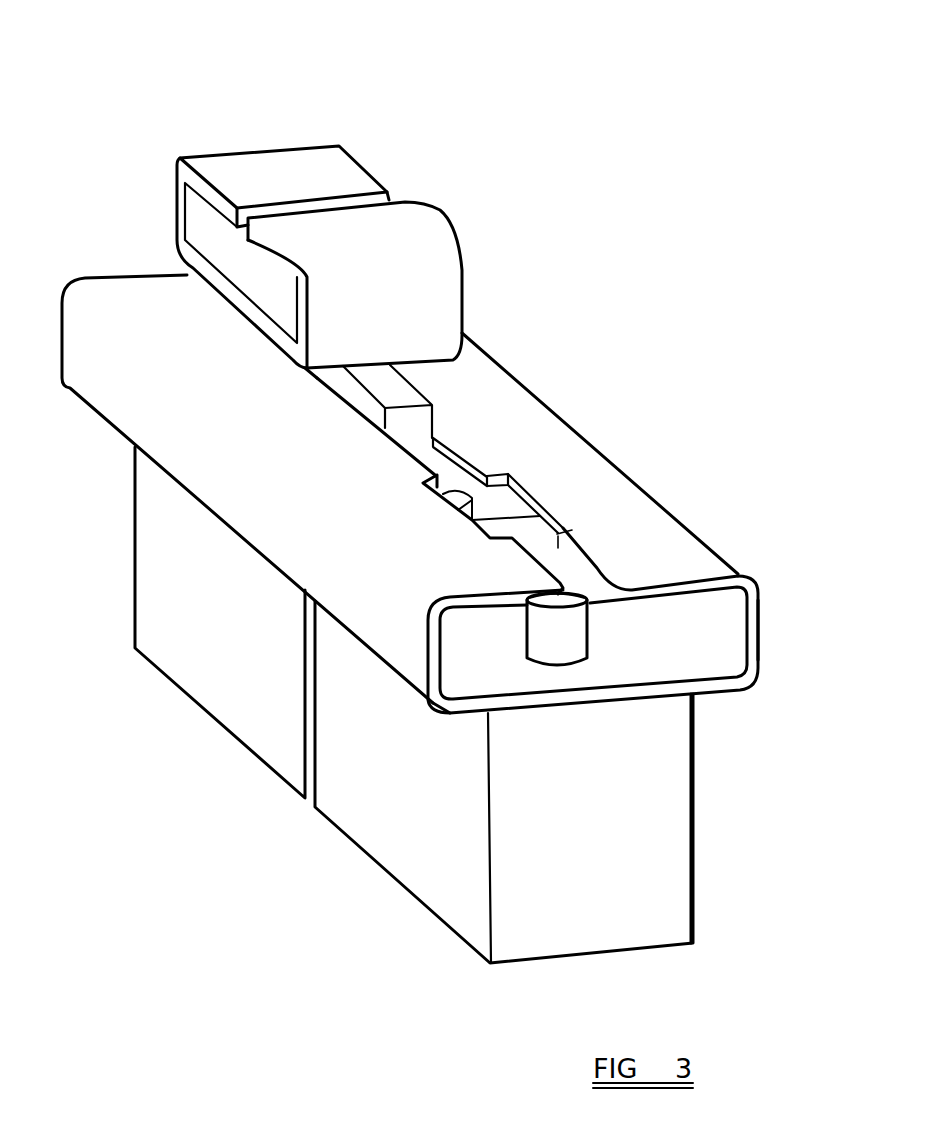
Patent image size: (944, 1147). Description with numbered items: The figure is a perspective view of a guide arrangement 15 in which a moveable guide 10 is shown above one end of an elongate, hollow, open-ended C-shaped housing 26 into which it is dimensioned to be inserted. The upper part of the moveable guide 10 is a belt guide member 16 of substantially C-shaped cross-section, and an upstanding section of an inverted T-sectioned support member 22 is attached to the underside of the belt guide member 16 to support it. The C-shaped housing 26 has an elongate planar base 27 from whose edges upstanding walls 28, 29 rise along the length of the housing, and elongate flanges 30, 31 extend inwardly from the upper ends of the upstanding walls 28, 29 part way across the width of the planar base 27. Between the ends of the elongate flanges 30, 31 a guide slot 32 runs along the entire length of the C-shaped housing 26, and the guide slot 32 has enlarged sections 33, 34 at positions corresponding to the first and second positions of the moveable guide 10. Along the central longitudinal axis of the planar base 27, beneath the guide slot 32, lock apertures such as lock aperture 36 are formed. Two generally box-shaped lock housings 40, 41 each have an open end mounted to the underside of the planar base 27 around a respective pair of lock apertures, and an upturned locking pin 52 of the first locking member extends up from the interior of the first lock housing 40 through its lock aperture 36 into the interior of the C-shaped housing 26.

The guide arrangement 15 is at (92, 192).
The moveable guide 10 is at (413, 243).
The belt guide member 16 is at (452, 287).
The support member 22 is at (398, 392).
The enlarged section of guide slot 33 is at (530, 496).
The guide slot 32 is at (560, 533).
The elongate flange 30 is at (668, 588).
The C-shaped housing 26 is at (780, 626).
The upstanding wall 28 is at (763, 653).
The planar base 27 is at (708, 692).
The lock aperture 36 is at (563, 673).
The locking pin 52 is at (572, 632).
The elongate flange 31 is at (500, 598).
The upstanding wall 29 is at (430, 660).
The lock housing 41 is at (246, 745).
The lock housing 40 is at (400, 888).
The enlarged section of guide slot 34 is at (317, 380).